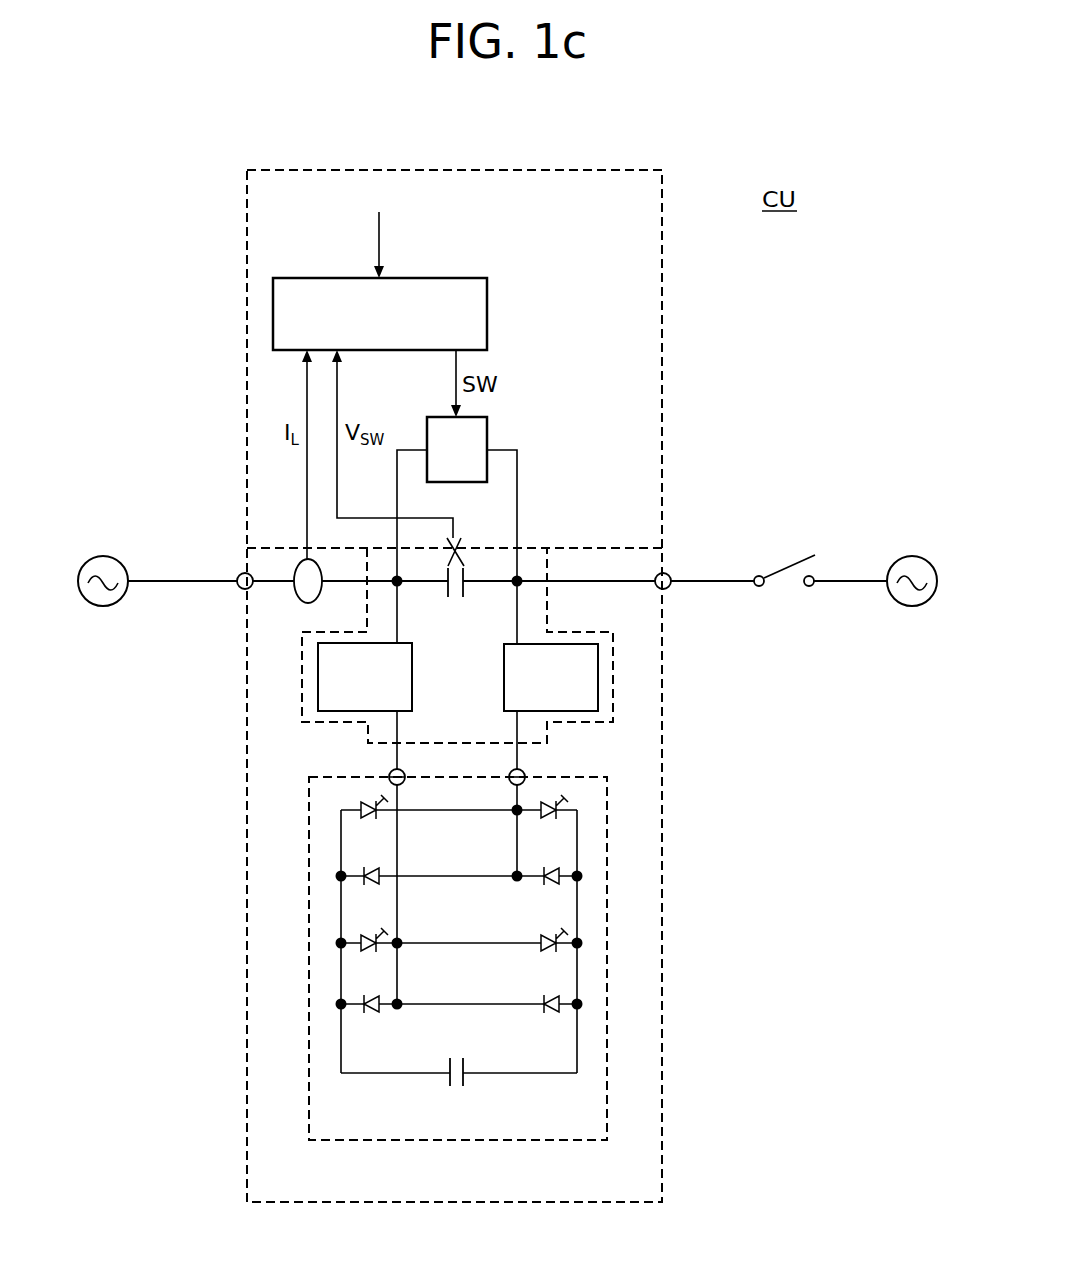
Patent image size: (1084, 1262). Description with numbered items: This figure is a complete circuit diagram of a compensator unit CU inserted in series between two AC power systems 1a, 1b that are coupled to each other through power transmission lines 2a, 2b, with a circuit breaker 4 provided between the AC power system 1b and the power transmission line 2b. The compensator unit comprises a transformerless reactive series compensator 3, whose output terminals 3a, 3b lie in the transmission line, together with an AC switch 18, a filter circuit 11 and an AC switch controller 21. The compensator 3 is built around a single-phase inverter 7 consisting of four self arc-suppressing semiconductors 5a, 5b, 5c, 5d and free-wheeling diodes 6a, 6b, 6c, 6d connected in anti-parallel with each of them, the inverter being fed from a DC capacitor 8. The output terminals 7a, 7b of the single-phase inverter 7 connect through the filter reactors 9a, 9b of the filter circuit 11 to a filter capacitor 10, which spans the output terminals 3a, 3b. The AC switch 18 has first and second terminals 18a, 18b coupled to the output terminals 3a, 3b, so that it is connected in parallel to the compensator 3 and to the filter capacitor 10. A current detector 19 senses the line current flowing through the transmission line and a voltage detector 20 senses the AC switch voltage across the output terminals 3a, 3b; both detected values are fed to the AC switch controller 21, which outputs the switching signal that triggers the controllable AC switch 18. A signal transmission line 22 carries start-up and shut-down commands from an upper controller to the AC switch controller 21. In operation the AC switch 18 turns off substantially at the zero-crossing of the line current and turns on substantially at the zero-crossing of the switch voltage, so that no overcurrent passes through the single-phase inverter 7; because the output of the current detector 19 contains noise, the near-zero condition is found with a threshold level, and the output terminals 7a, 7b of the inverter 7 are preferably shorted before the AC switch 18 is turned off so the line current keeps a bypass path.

The AC power system 1a is at (119, 560).
The AC power system 1b is at (918, 557).
The power transmission line 2a is at (165, 585).
The power transmission line 2b is at (718, 585).
The transformerless reactive series compensator 3 is at (663, 812).
The output terminal 3a is at (240, 590).
The output terminal 3b is at (656, 590).
The circuit breaker 4 is at (796, 560).
The self arc-suppressing semiconductor 5a is at (366, 816).
The self arc-suppressing semiconductor 5b is at (546, 816).
The self arc-suppressing semiconductor 5c is at (366, 949).
The self arc-suppressing semiconductor 5d is at (546, 949).
The free-wheeling diode 6a is at (366, 882).
The free-wheeling diode 6b is at (546, 882).
The free-wheeling diode 6c is at (366, 1010).
The free-wheeling diode 6d is at (546, 1010).
The single-phase inverter 7 is at (600, 777).
The output terminal of the single-phase inverter 7a is at (389, 777).
The output terminal of the single-phase inverter 7b is at (525, 777).
The DC capacitor 8 is at (449, 1082).
The filter reactor 9a is at (413, 690).
The filter reactor 9b is at (504, 692).
The filter capacitor 10 is at (448, 594).
The filter circuit 11 is at (545, 548).
The AC switch 18 is at (488, 432).
The first terminal of the AC switch 18a is at (400, 586).
The second terminal of the AC switch 18b is at (514, 586).
The current detector 19 is at (300, 600).
The voltage detector 20 is at (458, 545).
The AC switch controller 21 is at (468, 278).
The signal transmission line 22 is at (381, 240).